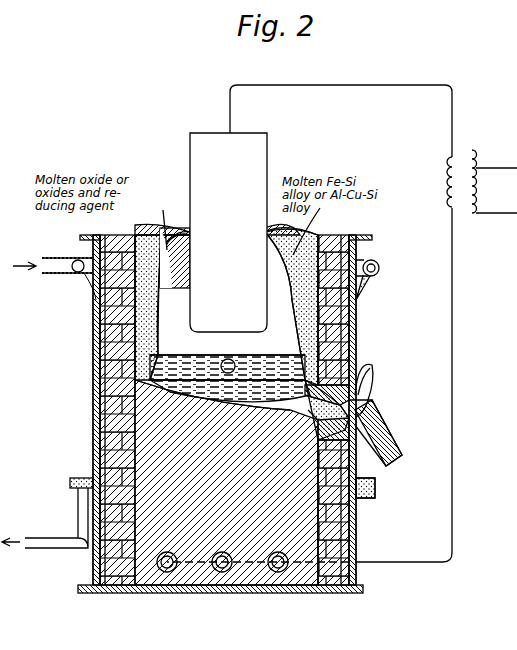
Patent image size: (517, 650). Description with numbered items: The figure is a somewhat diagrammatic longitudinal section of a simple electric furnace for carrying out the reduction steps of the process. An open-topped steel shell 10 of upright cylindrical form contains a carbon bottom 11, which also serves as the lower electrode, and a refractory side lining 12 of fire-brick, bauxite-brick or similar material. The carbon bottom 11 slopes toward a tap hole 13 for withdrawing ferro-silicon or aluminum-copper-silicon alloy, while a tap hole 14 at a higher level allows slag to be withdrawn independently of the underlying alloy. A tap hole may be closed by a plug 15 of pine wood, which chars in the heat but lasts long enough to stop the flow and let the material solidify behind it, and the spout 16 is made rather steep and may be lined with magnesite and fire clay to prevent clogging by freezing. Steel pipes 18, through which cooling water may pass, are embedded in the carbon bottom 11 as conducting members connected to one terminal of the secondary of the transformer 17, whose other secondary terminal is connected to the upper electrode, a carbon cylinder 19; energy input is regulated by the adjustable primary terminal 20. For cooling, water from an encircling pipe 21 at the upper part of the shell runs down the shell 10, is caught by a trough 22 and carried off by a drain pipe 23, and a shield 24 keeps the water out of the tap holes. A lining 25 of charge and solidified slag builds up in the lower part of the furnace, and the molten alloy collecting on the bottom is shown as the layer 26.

The steel shell 10 is at (93, 370).
The carbon bottom 11 is at (226, 482).
The refractory side lining 12 is at (100, 422).
The tap hole 13 is at (350, 400).
The tap hole 14 is at (224, 362).
The plug 15 is at (365, 425).
The spout 16 is at (385, 455).
The transformer 17 is at (309, 323).
The steel pipes 18 is at (270, 572).
The carbon cylinder 19 is at (228, 232).
The adjustable primary terminal 20 is at (500, 160).
The encircling pipe 21 is at (90, 258).
The trough 22 is at (82, 478).
The drain pipe 23 is at (78, 513).
The shield 24 is at (372, 372).
The lining 25 is at (356, 300).
The layer 26 is at (258, 398).